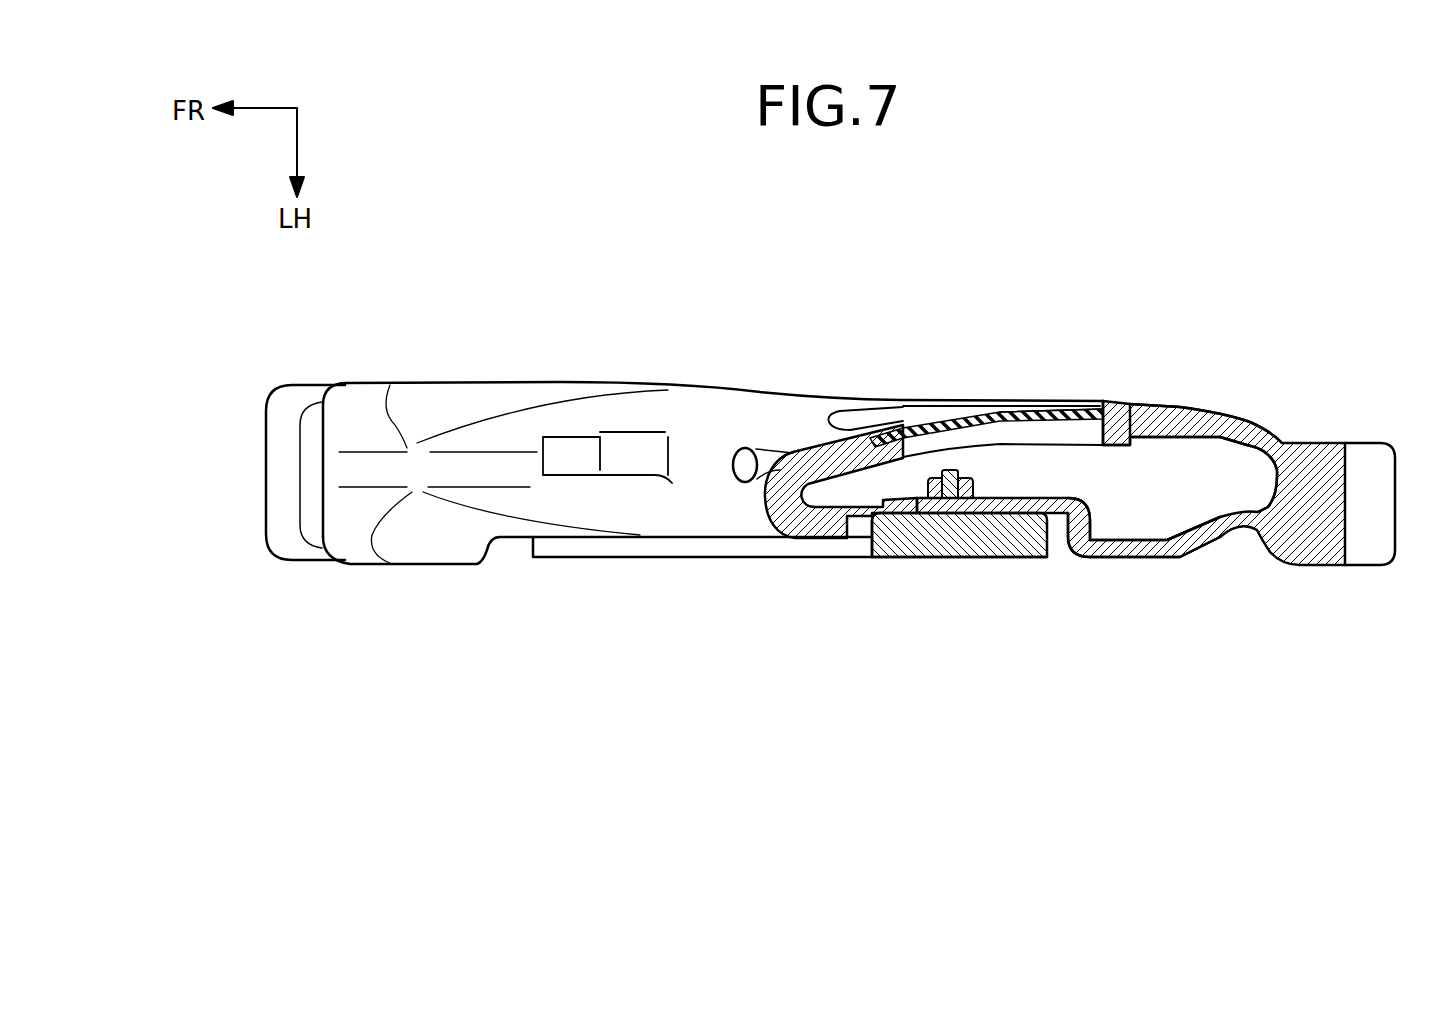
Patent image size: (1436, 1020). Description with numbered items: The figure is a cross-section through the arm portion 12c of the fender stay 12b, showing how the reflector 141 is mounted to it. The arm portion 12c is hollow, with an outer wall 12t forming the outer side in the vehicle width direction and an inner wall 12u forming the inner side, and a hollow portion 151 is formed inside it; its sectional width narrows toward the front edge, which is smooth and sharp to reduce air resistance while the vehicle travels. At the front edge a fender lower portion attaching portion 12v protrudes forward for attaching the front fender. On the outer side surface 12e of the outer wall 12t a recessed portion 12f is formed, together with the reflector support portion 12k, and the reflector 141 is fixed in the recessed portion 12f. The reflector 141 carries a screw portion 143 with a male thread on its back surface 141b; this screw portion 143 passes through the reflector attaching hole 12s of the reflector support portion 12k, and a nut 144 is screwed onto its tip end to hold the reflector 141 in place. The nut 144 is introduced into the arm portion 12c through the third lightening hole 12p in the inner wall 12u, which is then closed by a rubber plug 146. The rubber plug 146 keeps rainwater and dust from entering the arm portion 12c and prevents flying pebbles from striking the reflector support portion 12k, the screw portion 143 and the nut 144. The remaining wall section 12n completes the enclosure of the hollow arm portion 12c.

The housing 12b is at (556, 228).
The arm portion 12c is at (762, 395).
The fender lower portion attaching portion 12v is at (565, 450).
The reflector support portion 12k is at (925, 497).
The screw portion 143 is at (950, 470).
The nut 144 is at (978, 490).
The rubber plug 146 is at (1067, 417).
The third lightening hole 12p is at (1108, 420).
The inner wall 12u is at (1175, 408).
The upper wall 12n is at (1257, 410).
The back surface 141b is at (870, 514).
The reflector attaching hole 12s is at (952, 512).
The reflector 141 is at (1015, 560).
The recessed portion 12f is at (1060, 540).
The outer wall 12t is at (1163, 555).
The hollow portion 151 is at (1187, 483).
The outer side surface 12e is at (1238, 527).